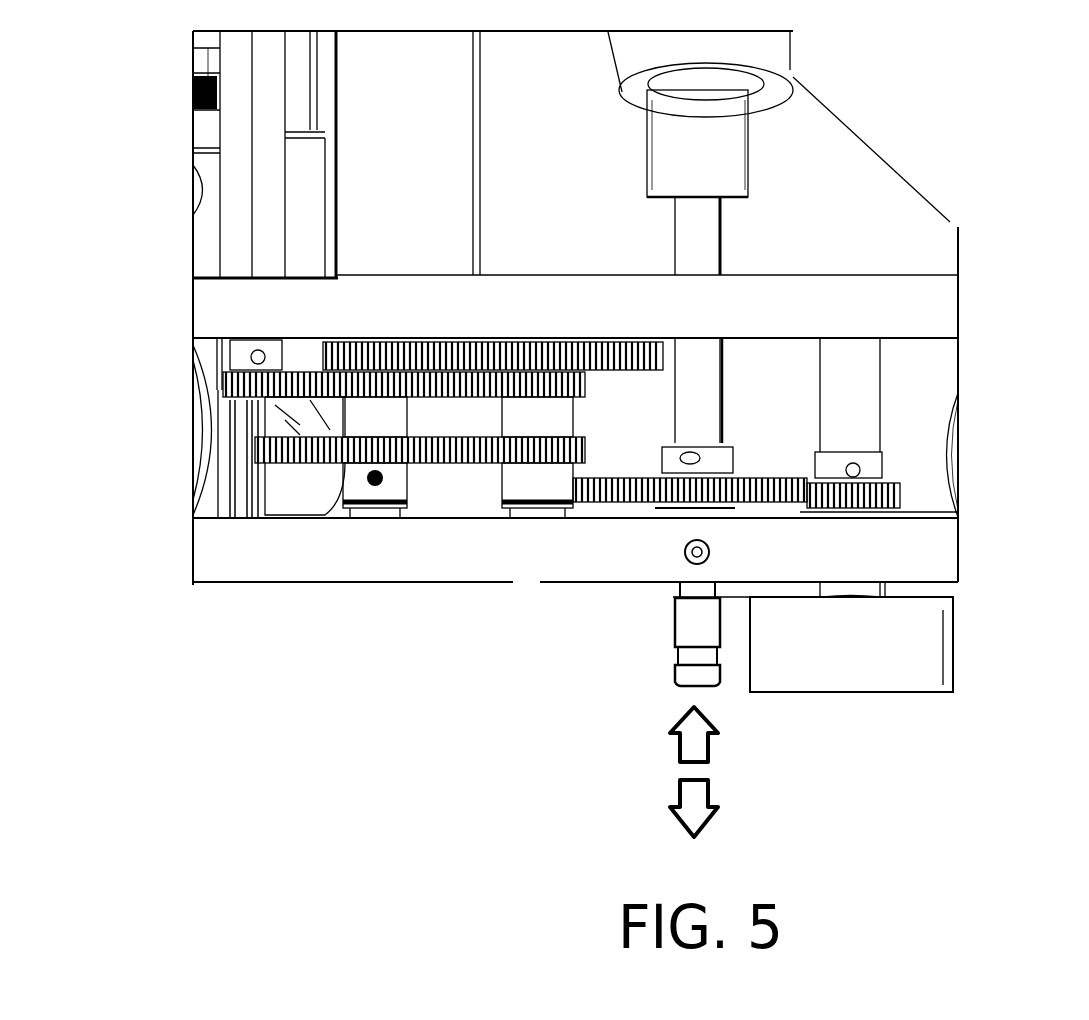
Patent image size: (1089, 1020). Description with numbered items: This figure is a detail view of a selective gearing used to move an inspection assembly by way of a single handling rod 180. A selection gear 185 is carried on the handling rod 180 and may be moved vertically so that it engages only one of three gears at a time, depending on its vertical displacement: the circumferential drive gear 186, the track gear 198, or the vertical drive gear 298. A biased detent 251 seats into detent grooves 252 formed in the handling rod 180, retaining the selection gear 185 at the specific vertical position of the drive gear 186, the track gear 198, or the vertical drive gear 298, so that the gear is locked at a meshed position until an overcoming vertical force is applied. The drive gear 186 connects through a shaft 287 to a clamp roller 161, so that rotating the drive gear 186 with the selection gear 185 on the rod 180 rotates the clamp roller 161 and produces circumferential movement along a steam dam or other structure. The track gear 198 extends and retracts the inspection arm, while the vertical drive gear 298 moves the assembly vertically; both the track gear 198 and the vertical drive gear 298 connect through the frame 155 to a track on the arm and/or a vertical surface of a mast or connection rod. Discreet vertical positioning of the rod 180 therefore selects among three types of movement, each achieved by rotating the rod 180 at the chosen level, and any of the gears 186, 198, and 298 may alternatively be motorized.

The frame 155 is at (265, 308).
The handling rod 180 is at (760, 40).
The vertical drive gear 298 is at (588, 378).
The track gear 198 is at (585, 443).
The selection gear 185 is at (750, 503).
The circumferential drive gear 186 is at (817, 483).
The shaft 287 is at (860, 513).
The clamp roller 161 is at (908, 640).
The biased detent 251 is at (683, 550).
The detent grooves 252 is at (670, 660).